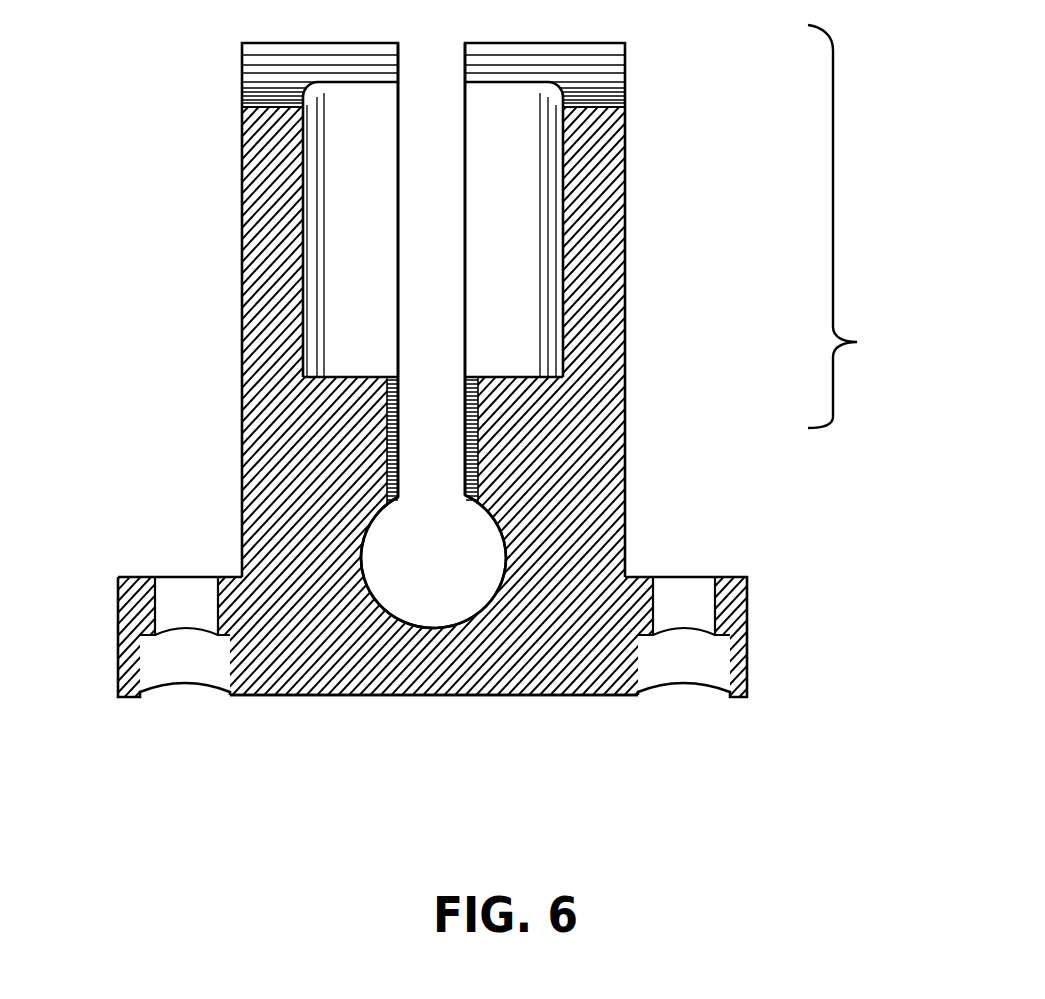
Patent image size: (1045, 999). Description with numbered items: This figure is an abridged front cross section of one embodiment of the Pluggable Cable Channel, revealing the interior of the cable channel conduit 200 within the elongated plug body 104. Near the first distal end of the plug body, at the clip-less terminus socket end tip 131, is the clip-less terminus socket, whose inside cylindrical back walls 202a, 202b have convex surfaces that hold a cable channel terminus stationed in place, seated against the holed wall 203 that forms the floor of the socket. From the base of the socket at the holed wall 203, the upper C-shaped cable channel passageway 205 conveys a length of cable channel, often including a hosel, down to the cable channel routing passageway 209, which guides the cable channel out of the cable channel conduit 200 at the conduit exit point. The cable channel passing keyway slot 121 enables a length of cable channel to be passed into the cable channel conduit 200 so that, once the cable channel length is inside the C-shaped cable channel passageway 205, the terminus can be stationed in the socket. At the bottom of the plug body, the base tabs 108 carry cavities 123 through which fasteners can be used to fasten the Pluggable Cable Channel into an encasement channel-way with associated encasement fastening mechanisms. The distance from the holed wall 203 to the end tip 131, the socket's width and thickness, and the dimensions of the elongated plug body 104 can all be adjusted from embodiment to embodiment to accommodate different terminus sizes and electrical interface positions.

The elongated plug body 104 is at (242, 334).
The base tabs 108 is at (142, 577).
The cable channel passing keyway slot 121 is at (423, 197).
The cavities 123 is at (175, 688).
The clip-less terminus socket end tip 131 is at (282, 70).
The cable channel conduit 200 is at (870, 226).
The inside cylindrical back wall 202a is at (363, 115).
The inside cylindrical back wall 202b is at (510, 188).
The holed wall 203 is at (513, 375).
The upper C-shaped cable channel passageway 205 is at (430, 437).
The cable channel routing passageway 209 is at (433, 558).